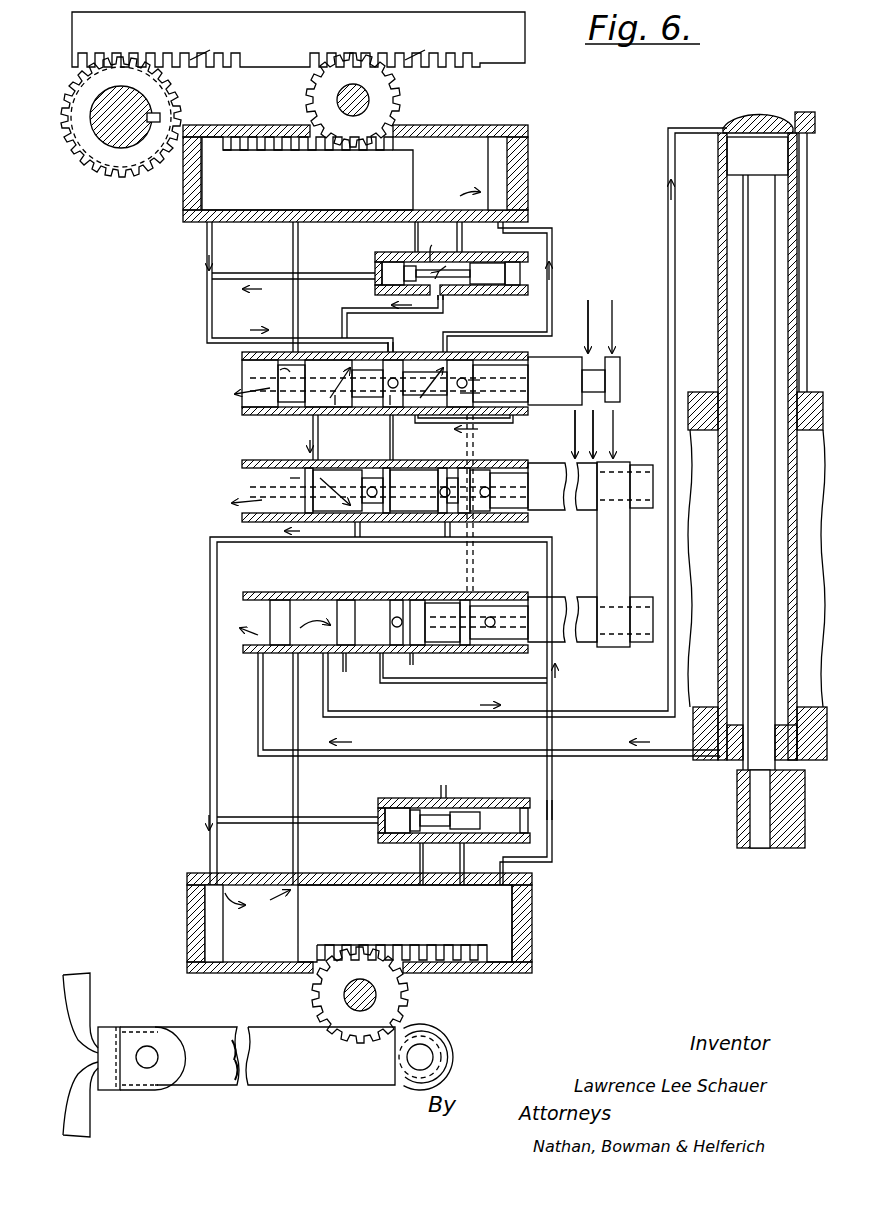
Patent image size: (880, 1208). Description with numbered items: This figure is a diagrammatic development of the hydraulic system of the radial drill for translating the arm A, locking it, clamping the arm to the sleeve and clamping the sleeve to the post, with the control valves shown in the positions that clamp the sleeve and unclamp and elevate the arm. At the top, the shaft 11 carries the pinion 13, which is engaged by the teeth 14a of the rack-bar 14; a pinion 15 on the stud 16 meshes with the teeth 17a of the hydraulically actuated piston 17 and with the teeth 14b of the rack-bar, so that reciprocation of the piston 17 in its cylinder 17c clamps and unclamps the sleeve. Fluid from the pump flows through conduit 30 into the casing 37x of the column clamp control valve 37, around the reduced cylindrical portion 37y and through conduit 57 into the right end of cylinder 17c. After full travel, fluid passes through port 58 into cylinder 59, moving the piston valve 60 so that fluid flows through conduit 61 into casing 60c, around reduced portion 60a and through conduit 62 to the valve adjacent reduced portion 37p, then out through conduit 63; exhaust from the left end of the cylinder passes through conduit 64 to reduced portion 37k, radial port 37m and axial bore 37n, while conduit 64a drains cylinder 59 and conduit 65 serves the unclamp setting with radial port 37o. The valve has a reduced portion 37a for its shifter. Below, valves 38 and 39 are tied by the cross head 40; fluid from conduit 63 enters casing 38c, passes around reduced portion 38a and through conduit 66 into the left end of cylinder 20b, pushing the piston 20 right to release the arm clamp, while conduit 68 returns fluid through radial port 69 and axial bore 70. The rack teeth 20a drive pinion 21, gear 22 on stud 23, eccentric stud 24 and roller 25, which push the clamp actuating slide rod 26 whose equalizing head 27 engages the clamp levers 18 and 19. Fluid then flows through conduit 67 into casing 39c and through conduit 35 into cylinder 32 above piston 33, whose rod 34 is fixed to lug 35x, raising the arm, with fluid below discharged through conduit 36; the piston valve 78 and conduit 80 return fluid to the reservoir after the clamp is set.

The shaft 11 is at (118, 145).
The pinion 13 is at (176, 102).
The rack-bar 14 is at (298, 39).
The teeth of rack-bar 14a is at (190, 62).
The teeth of rack-bar 14b is at (408, 55).
The pinion 15 is at (398, 100).
The stud 16 is at (337, 100).
The piston 17 is at (307, 173).
The teeth of piston 17a is at (330, 150).
The cylinder 17c is at (504, 125).
The clamp lever 18 is at (88, 983).
The clamp lever 19 is at (88, 1124).
The piston 20 is at (405, 923).
The rack teeth 20a is at (445, 952).
The hydraulic cylinder 20b is at (268, 877).
The pinion 21 is at (409, 996).
The gear 22 is at (438, 1026).
The stud 23 is at (440, 1045).
The eccentric stud 24 is at (433, 1057).
The roller 25 is at (435, 1072).
The clamp actuating slide rod 26 is at (260, 1030).
The equalizing head 27 is at (125, 1027).
The conduit 30 is at (495, 423).
The cylinder 32 is at (718, 318).
The piston 33 is at (727, 162).
The rod 34 is at (755, 247).
The conduit 35 is at (388, 712).
The lug 35x is at (737, 816).
The conduit 36 is at (258, 690).
The column clamp control valve 37 is at (427, 382).
The reduced portion 37a is at (605, 395).
The reduced portion 37k is at (394, 350).
The radial port 37m is at (390, 405).
The axial bore 37n is at (289, 375).
The radial port 37o is at (472, 380).
The reduced portion 37p is at (335, 405).
The casing 37x is at (262, 418).
The reduced cylindrical portion 37y is at (462, 393).
The valve 38 is at (575, 512).
The reduced portion 38a is at (348, 512).
The casing 38c is at (278, 460).
The valve 39 is at (578, 597).
The casing 39c is at (303, 596).
The cross head 40 is at (613, 528).
The conduit 57 is at (515, 334).
The port 58 is at (415, 239).
The cylinder 59 is at (430, 254).
The piston valve 60 is at (451, 273).
The reduced portion 60a is at (445, 298).
The casing 60c is at (512, 295).
The conduit 61 is at (462, 238).
The conduit 62 is at (362, 312).
The conduit 63 is at (313, 432).
The conduit 64 is at (207, 253).
The conduit 64a is at (258, 273).
The conduit 65 is at (298, 244).
The conduit 66 is at (248, 541).
The conduit 67 is at (293, 790).
The conduit 68 is at (553, 812).
The radial port 69 is at (440, 522).
The axial bore 70 is at (300, 488).
The piston valve 78 is at (506, 808).
The conduit 80 is at (443, 787).
The arm A is at (704, 392).